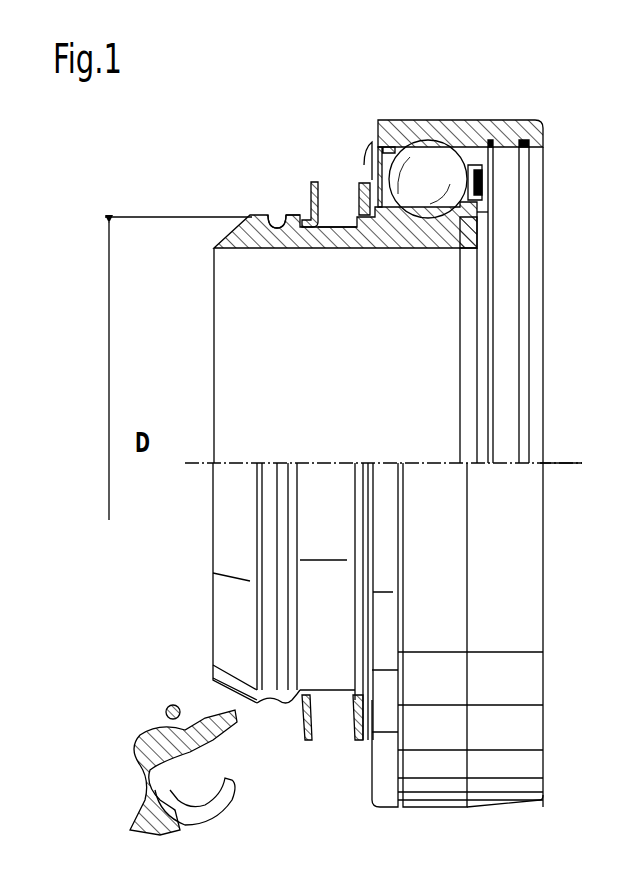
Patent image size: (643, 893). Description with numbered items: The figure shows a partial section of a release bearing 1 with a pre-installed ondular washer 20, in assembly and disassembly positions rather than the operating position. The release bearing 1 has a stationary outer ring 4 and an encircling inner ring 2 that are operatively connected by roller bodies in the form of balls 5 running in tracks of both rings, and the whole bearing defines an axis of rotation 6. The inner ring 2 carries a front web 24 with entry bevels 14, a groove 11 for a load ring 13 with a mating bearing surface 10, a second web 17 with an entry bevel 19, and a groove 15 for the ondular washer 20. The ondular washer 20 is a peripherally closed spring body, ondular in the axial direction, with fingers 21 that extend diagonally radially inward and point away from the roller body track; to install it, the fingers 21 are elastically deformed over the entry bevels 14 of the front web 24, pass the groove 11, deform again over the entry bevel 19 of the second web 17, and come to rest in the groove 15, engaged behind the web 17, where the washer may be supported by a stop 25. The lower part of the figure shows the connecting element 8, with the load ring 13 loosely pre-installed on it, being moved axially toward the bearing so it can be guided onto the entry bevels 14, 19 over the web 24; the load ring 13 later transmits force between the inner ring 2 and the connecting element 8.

The release bearing 1 is at (266, 108).
The inner ring 2 is at (470, 220).
The outer ring 4 is at (488, 128).
The balls 5 is at (465, 170).
The axis of rotation 6 is at (573, 470).
The connecting element 8 is at (135, 748).
The mating bearing surface 10 is at (274, 207).
The groove 11 is at (282, 213).
The load ring 13 is at (167, 706).
The entry bevels 14 is at (213, 232).
The groove 15 is at (337, 222).
The second web 17 is at (292, 712).
The entry bevel 19 is at (282, 710).
The ondular washer 20 is at (358, 742).
The fingers 21 is at (308, 205).
The front web 24 is at (262, 213).
The stop 25 is at (372, 182).